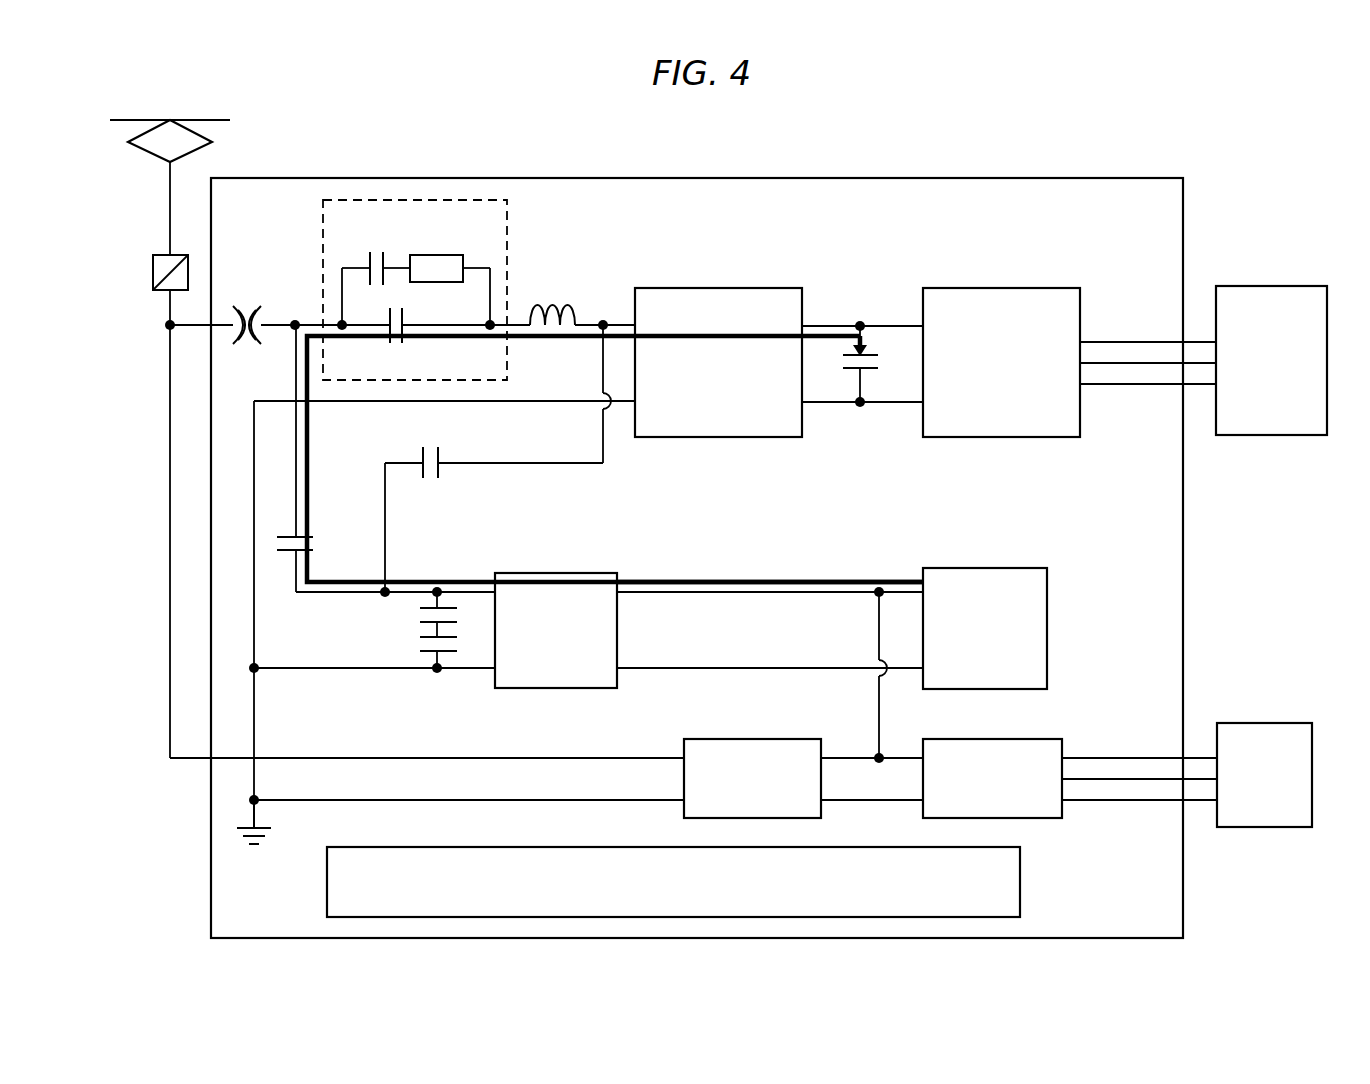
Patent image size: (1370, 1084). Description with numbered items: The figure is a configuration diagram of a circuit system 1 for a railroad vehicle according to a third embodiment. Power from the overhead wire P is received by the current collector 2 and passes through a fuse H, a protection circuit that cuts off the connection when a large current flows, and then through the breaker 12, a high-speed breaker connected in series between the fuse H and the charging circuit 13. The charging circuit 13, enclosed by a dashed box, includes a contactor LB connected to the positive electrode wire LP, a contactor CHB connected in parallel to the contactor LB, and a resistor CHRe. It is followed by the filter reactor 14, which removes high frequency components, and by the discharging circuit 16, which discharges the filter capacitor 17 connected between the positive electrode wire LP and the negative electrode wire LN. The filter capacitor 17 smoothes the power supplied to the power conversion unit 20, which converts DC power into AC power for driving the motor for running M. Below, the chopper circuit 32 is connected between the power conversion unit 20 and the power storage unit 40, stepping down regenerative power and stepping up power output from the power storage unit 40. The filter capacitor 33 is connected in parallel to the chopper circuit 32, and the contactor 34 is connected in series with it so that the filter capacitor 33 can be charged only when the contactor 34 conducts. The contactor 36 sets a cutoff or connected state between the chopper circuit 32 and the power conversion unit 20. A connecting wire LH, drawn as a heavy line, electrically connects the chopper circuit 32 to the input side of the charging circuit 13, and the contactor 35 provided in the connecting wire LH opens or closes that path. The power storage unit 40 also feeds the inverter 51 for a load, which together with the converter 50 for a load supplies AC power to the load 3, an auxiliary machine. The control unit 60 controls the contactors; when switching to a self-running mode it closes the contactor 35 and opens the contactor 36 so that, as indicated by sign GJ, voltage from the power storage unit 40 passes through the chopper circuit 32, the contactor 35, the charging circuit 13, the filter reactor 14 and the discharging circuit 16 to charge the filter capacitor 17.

The circuit system 1 is at (1133, 178).
The overhead wire P is at (213, 120).
The current collector 2 is at (215, 133).
The fuse H is at (165, 254).
The breaker 12 is at (245, 305).
The charging circuit 13 is at (507, 222).
The contactor CHB is at (388, 262).
The resistor CHRe is at (457, 237).
The contactor LB is at (403, 317).
The filter reactor 14 is at (553, 305).
The connecting wire LH is at (295, 358).
The discharging circuit 16 is at (760, 288).
The filter capacitor 17 is at (868, 372).
The power conversion unit 20 is at (1022, 288).
The motor for running M is at (1268, 286).
The contactor 35 is at (281, 537).
The contactor 36 is at (438, 475).
The positive electrode wire LP is at (322, 592).
The contactor 34 is at (425, 600).
The filter capacitor 33 is at (445, 655).
The negative electrode wire LN is at (300, 668).
The chopper circuit 32 is at (560, 573).
The sign GJ is at (742, 580).
The power storage unit 40 is at (993, 570).
The converter for a load 50 is at (765, 740).
The inverter for a load 51 is at (1005, 740).
The load 3 is at (1268, 723).
The control unit 60 is at (1020, 878).